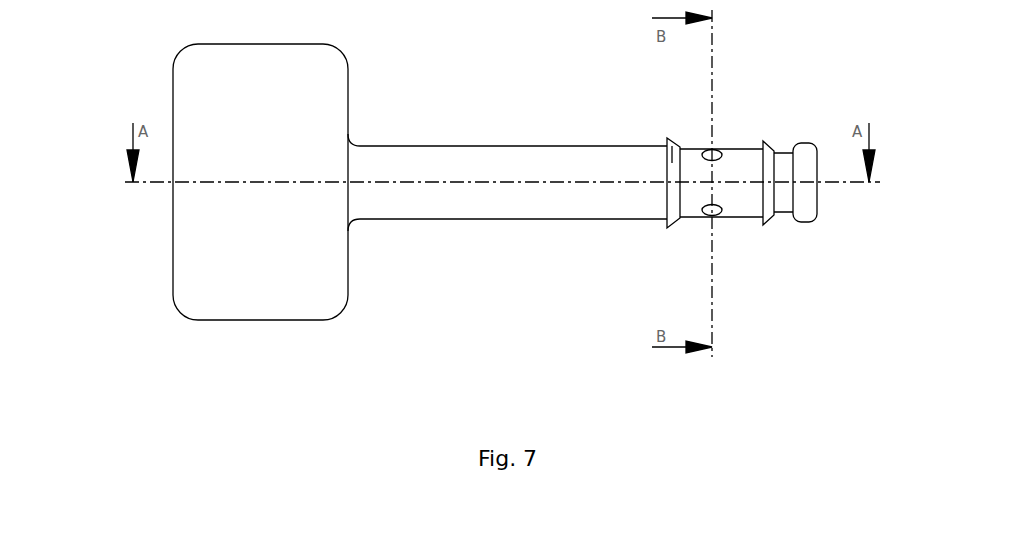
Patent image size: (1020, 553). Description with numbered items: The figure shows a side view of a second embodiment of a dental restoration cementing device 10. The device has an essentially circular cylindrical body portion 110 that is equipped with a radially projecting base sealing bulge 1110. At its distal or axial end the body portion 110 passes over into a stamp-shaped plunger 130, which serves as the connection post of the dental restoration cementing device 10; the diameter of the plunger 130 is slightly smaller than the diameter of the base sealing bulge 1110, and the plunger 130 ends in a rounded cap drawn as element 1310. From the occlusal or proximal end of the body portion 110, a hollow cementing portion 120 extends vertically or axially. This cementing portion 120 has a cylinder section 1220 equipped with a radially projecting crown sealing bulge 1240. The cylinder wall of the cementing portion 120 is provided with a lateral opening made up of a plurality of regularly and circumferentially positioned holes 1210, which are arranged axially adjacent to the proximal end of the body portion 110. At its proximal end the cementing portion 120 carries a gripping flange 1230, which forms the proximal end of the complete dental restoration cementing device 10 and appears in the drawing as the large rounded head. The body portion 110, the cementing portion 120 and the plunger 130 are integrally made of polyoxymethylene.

The dental restoration cementing device 10 is at (142, 93).
The cementing portion 120 is at (170, 350).
The gripping flange 1230 is at (190, 74).
The cylinder section 1220 is at (446, 155).
The crown sealing bulge 1240 is at (672, 152).
The body portion 110 is at (728, 228).
The holes 1210 is at (716, 153).
The base sealing bulge 1110 is at (775, 152).
The plunger 130 is at (792, 228).
The end cap 1310 is at (813, 152).